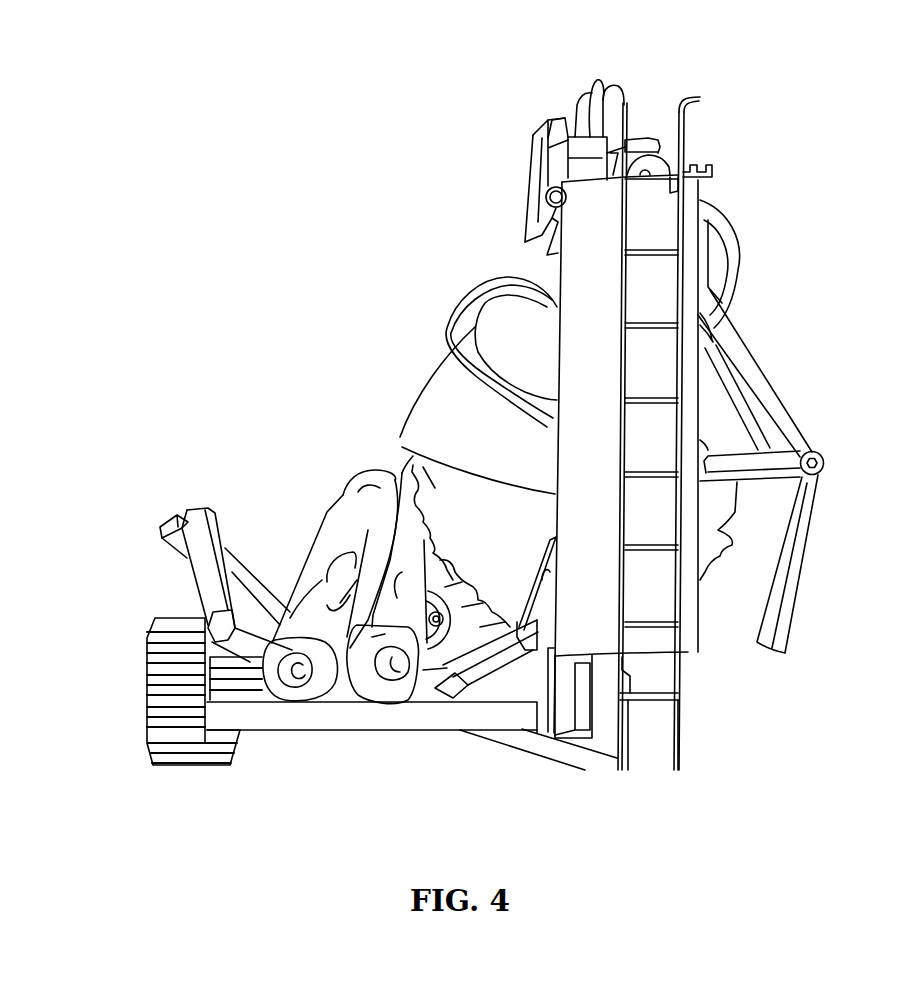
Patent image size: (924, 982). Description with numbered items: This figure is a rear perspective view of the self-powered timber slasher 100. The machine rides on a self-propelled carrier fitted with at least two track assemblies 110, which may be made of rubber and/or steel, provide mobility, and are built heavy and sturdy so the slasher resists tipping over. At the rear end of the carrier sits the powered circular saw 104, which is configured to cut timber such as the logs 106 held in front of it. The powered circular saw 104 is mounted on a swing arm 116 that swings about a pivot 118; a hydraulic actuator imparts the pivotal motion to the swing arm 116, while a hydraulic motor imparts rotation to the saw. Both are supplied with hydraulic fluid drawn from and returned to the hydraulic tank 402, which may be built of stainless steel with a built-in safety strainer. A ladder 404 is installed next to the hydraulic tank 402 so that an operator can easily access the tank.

The self-powered timber slasher 100 is at (448, 86).
The powered circular saw 104 is at (413, 453).
The logs 106 is at (343, 517).
The track assemblies 110 is at (158, 673).
The swing arm 116 is at (775, 385).
The pivot 118 is at (550, 192).
The hydraulic tank 402 is at (693, 238).
The ladder 404 is at (687, 105).